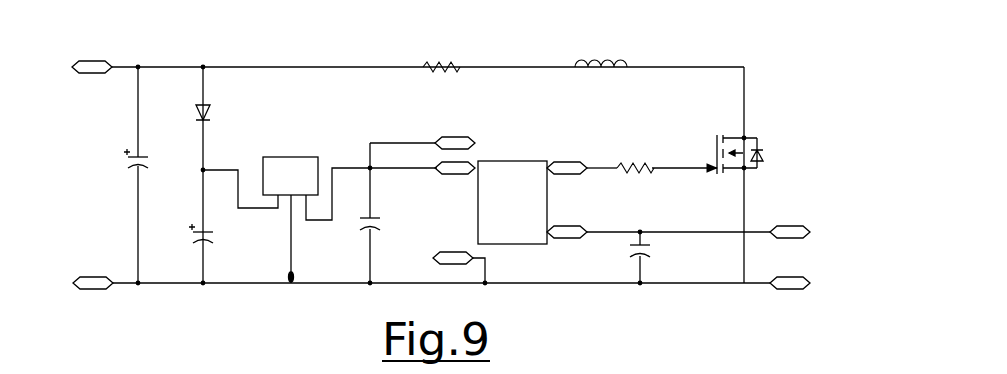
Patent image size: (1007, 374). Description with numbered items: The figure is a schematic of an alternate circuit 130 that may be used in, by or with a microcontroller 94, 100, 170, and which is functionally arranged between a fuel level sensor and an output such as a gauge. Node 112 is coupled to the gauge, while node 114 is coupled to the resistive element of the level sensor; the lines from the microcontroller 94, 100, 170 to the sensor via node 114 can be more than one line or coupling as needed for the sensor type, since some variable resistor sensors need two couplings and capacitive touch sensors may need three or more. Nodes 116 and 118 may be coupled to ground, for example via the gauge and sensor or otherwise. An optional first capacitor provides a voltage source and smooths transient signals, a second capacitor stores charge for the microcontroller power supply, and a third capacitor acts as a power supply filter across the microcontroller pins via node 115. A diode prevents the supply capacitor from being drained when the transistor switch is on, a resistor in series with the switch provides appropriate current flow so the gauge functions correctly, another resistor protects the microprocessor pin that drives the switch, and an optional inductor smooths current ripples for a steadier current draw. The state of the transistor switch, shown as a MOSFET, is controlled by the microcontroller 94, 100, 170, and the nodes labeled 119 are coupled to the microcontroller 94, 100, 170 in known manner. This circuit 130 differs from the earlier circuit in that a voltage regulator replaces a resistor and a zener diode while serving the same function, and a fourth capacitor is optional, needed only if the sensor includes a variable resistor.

The alternate circuit 130 is at (778, 58).
The node 112 is at (84, 61).
The node 116 is at (93, 280).
The node 115 is at (455, 147).
The nodes 119 is at (579, 162).
The microcontroller 94 is at (591, 202).
The microcontroller 100 is at (591, 202).
The control module 170 is at (532, 187).
The node 114 is at (792, 229).
The node 118 is at (792, 286).